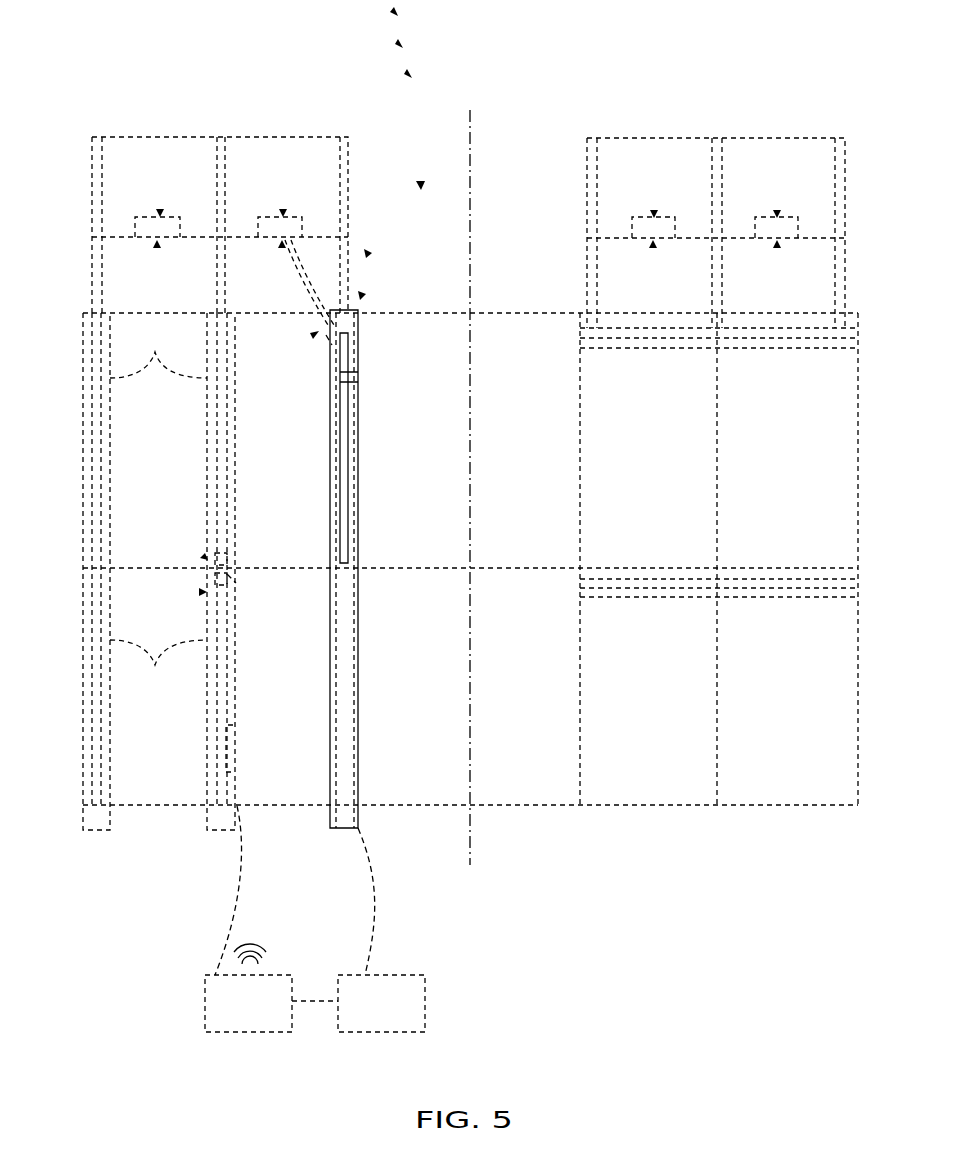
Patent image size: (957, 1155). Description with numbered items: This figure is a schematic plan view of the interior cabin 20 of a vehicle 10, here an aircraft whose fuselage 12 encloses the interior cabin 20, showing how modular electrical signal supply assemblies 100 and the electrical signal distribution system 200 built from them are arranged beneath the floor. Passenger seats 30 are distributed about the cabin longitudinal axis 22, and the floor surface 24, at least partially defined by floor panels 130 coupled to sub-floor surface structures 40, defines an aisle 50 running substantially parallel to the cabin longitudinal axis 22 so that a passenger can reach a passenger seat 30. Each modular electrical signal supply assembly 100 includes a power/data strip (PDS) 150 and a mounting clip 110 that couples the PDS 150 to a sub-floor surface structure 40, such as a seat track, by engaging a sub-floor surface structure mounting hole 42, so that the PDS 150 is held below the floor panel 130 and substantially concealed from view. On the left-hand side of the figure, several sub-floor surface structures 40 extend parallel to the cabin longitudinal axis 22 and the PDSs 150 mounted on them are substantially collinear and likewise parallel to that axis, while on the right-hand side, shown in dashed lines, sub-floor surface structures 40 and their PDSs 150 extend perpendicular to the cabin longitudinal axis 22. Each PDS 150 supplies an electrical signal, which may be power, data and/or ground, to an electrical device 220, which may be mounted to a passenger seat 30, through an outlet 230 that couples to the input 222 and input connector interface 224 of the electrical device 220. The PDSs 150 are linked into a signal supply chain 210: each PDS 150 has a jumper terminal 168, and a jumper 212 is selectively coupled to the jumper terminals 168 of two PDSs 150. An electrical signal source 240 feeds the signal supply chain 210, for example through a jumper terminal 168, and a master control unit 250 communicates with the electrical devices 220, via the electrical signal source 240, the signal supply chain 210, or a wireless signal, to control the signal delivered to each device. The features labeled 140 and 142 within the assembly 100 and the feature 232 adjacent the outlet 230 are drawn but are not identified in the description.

The vehicle 10 is at (395, 11).
The fuselage 12 is at (400, 44).
The interior cabin 20 is at (408, 74).
The cabin longitudinal axis 22 is at (470, 140).
The floor surface 24 is at (512, 790).
The passenger seat 30 is at (255, 137).
The sub-floor surface structure 40 is at (108, 840).
The sub-floor surface structure mounting hole 42 is at (83, 313).
The aisle 50 is at (420, 184).
The modular electrical signal supply assembly 100 is at (362, 296).
The mounting clip 110 is at (358, 378).
The floor panel 130 is at (175, 447).
The channel 140 is at (330, 425).
The channel segment 142 is at (266, 568).
The power/data strip 150 is at (110, 500).
The jumper terminal 168 is at (205, 557).
The electrical signal distribution system 200 is at (369, 252).
The signal supply chain 210 is at (234, 770).
The jumper 212 is at (236, 582).
The electrical device 220 is at (159, 212).
The input 222 is at (156, 246).
The input connector interface 224 is at (172, 240).
The outlet 230 is at (314, 335).
The cable connection 232 is at (330, 337).
The electrical signal source 240 is at (383, 1034).
The master control unit 250 is at (250, 1034).